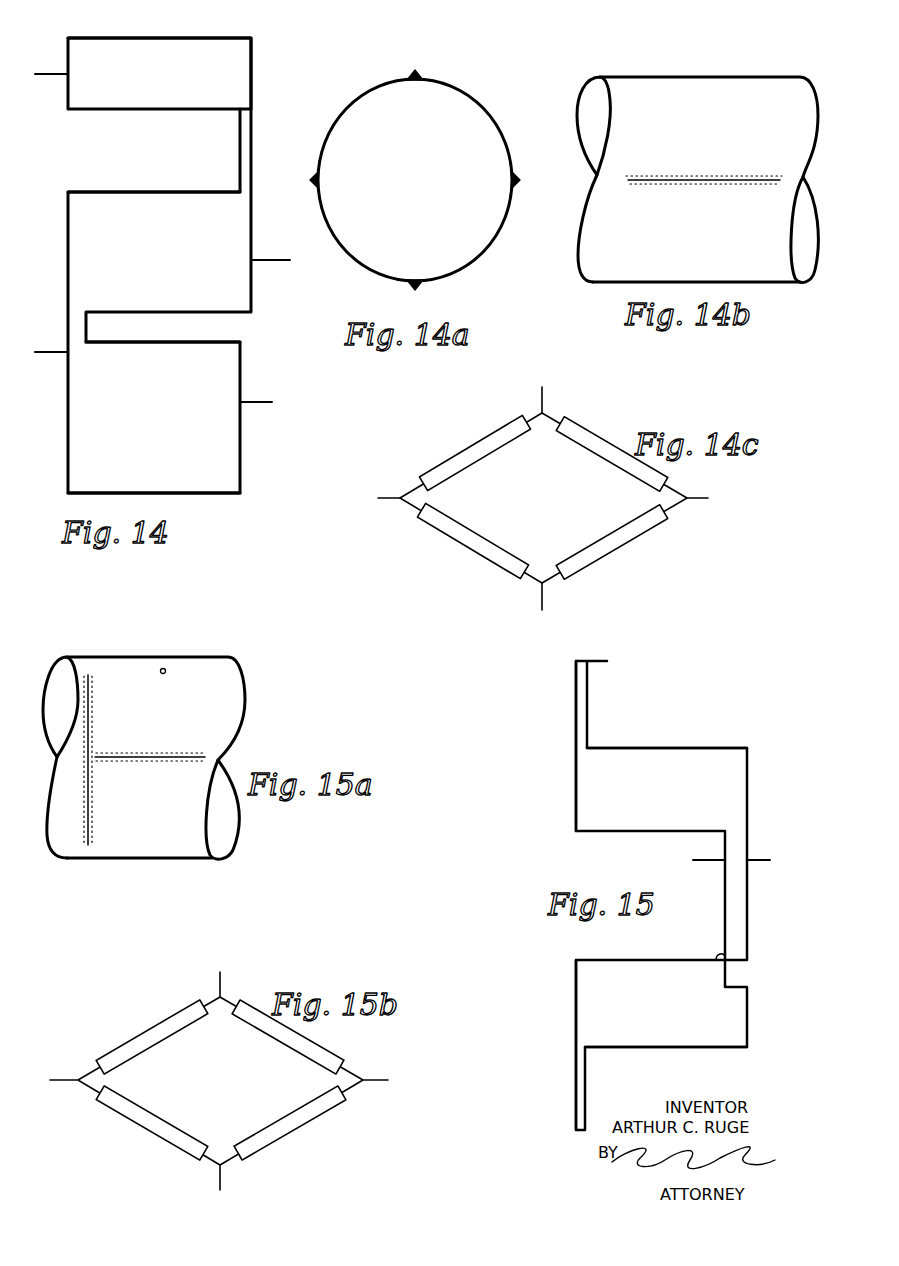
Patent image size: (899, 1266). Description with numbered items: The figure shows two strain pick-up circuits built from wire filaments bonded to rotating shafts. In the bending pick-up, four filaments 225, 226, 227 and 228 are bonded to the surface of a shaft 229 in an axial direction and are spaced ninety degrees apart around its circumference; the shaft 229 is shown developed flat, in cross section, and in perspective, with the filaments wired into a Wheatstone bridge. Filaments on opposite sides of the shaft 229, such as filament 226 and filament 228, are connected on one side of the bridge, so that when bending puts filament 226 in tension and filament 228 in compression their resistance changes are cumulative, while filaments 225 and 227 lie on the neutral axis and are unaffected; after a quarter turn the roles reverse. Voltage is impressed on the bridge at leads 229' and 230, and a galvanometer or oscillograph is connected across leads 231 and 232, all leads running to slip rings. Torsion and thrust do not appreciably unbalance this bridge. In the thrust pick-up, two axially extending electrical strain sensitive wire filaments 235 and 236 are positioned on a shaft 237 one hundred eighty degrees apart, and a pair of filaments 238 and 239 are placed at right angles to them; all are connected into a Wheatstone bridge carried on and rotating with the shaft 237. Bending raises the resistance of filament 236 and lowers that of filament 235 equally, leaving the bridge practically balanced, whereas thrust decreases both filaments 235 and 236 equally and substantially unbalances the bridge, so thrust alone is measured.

In FIG. 14, the filament 225 is at (122, 492).
In FIG. 14A, the filament 225 is at (514, 178).
In FIG. 14B, the filament 225 is at (668, 180).
In FIG. 14C, the filament 225 is at (466, 538).
In FIG. 14, the filament 226 is at (128, 343).
In FIG. 14A, the filament 226 is at (418, 76).
In FIG. 14C, the filament 226 is at (475, 462).
In FIG. 14, the filament 227 is at (190, 193).
In FIG. 14A, the filament 227 is at (313, 180).
In FIG. 14C, the filament 227 is at (610, 540).
In FIG. 14, the filament 228 is at (134, 40).
In FIG. 14A, the filament 228 is at (414, 285).
In FIG. 14C, the filament 228 is at (612, 461).
In FIG. 14A, the shaft 229 is at (460, 180).
In FIG. 14, the lead 229' is at (267, 418).
In FIG. 14C, the lead 229' is at (371, 511).
In FIG. 14, the lead 230 is at (48, 74).
In FIG. 14C, the lead 230 is at (697, 500).
In FIG. 14, the lead 231 is at (48, 352).
In FIG. 14C, the lead 231 is at (544, 597).
In FIG. 14, the lead 232 is at (268, 262).
In FIG. 14C, the lead 232 is at (544, 403).
In FIG. 15A, the electrical strain sensitive wire filament 235 is at (118, 757).
In FIG. 15B, the electrical strain sensitive wire filament 235 is at (146, 1118).
In FIG. 15, the electrical strain sensitive wire filament 235 is at (632, 1047).
In FIG. 15B, the electrical strain sensitive wire filament 236 is at (284, 1038).
In FIG. 15, the electrical strain sensitive wire filament 236 is at (636, 748).
In FIG. 15A, the shaft 237 is at (224, 702).
In FIG. 15A, the filament 238 is at (88, 702).
In FIG. 15B, the filament 238 is at (284, 1122).
In FIG. 15, the filament 238 is at (577, 997).
In FIG. 15B, the filament 239 is at (148, 1037).
In FIG. 15, the filament 239 is at (576, 797).